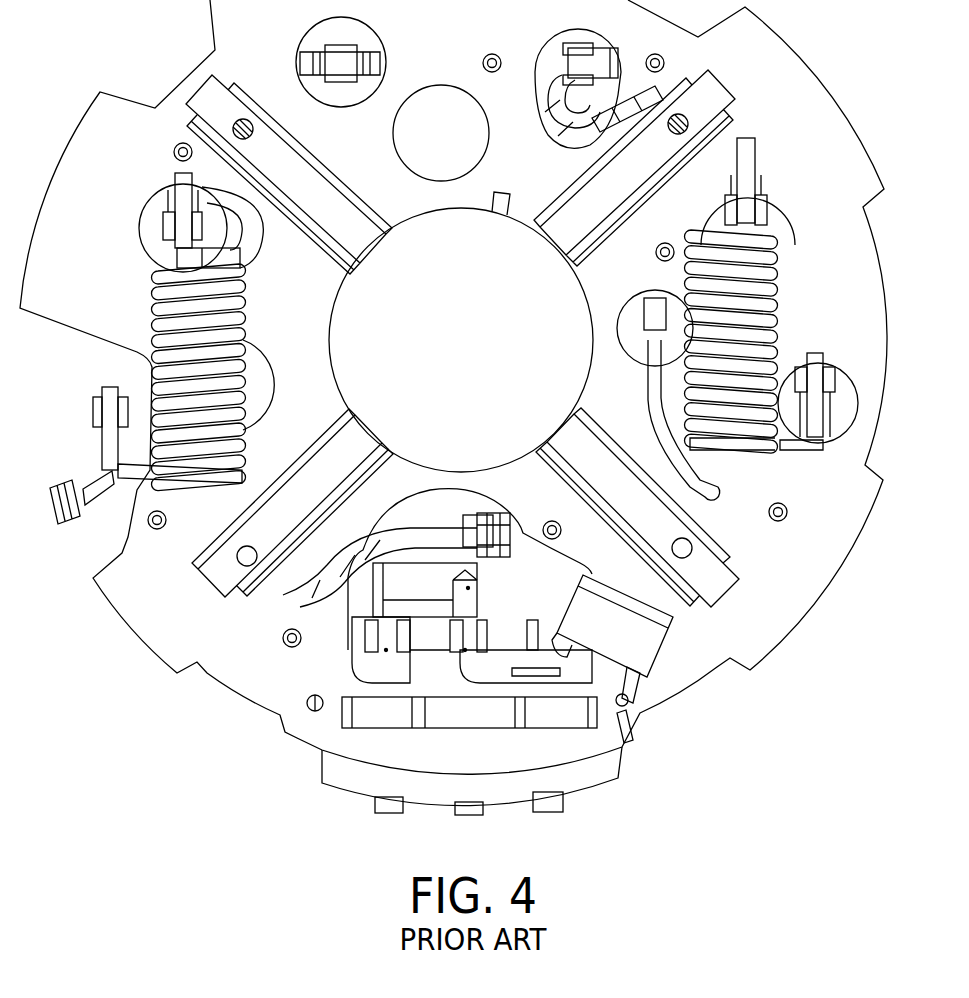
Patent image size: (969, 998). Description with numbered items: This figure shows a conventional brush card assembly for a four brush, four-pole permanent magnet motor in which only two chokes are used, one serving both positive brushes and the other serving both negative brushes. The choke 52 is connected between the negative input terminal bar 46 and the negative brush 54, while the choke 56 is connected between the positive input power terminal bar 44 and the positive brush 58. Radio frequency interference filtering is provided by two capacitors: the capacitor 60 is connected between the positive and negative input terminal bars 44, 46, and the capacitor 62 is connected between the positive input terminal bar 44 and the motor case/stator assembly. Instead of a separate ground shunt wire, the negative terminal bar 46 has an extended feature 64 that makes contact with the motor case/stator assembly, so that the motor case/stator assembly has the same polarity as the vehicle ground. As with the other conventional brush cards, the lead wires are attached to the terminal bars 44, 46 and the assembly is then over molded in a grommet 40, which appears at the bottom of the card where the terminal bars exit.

The grommet 40 is at (622, 765).
The positive input terminal bar 44 is at (502, 647).
The negative input terminal bar 46 is at (347, 662).
The choke 52 is at (152, 310).
The brush 54 is at (200, 88).
The choke 56 is at (780, 350).
The brush 58 is at (730, 80).
The capacitor 60 is at (428, 590).
The capacitor 62 is at (668, 643).
The extended feature 64 is at (90, 517).